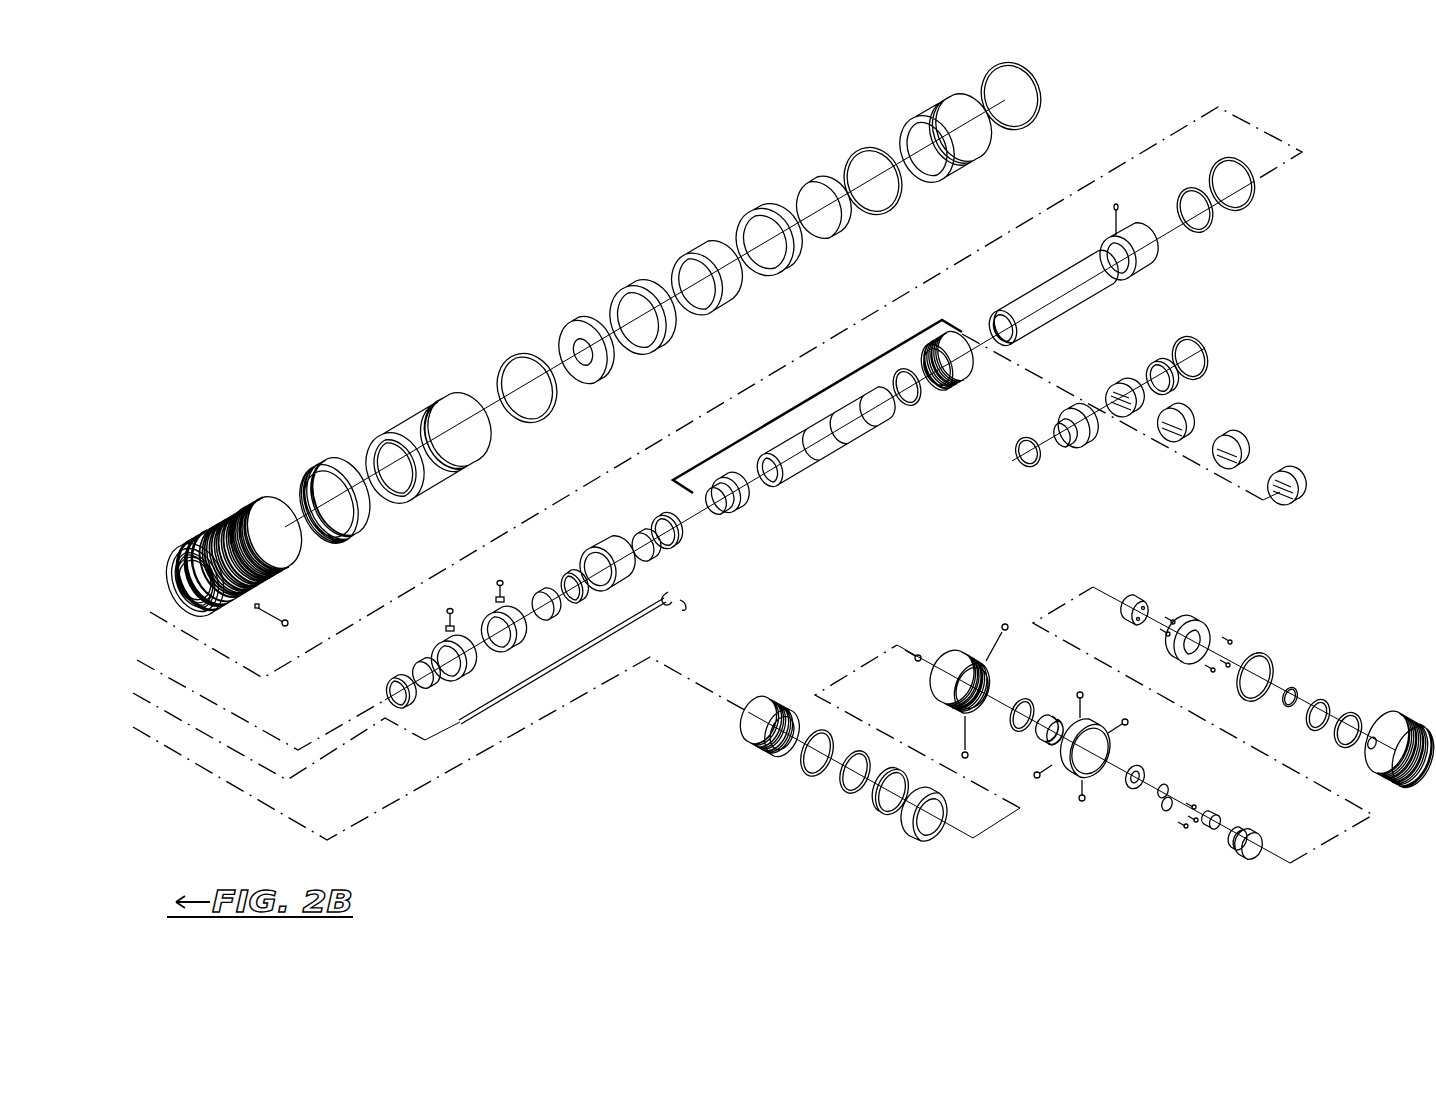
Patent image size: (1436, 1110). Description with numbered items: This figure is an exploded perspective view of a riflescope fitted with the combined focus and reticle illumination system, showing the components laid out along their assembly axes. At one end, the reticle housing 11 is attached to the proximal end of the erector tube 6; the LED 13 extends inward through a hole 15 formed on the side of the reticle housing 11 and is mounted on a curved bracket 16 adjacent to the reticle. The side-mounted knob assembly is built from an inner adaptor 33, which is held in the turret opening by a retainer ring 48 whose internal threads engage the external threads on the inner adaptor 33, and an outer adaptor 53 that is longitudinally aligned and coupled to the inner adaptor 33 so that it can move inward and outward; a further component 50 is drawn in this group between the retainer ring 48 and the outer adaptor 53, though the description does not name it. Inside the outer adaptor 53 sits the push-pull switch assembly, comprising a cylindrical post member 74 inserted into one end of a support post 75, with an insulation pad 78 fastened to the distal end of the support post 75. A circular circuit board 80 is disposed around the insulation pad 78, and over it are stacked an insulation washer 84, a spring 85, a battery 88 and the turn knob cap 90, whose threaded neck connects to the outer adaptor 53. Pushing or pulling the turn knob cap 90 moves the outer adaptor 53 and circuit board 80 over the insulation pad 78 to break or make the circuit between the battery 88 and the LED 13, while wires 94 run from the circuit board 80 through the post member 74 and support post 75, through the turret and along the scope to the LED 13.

The erector tube 6 is at (807, 400).
The reticle housing 11 is at (1147, 262).
The LED 13 is at (664, 597).
The hole 15 is at (1157, 247).
The curved bracket 16 is at (682, 598).
The inner adaptor 33 is at (758, 733).
The retainer ring 48 is at (913, 830).
The knurled collar 50 is at (953, 650).
The outer adaptor 53 is at (1110, 743).
The post member 74 is at (1220, 820).
The support post 75 is at (1233, 847).
The insulation pad 78 is at (1143, 600).
The circuit board 80 is at (1192, 618).
The insulation washer 84 is at (1262, 652).
The spring 85 is at (1348, 712).
The battery 88 is at (1373, 733).
The turn knob cap 90 is at (1415, 770).
The wires 94 is at (625, 628).